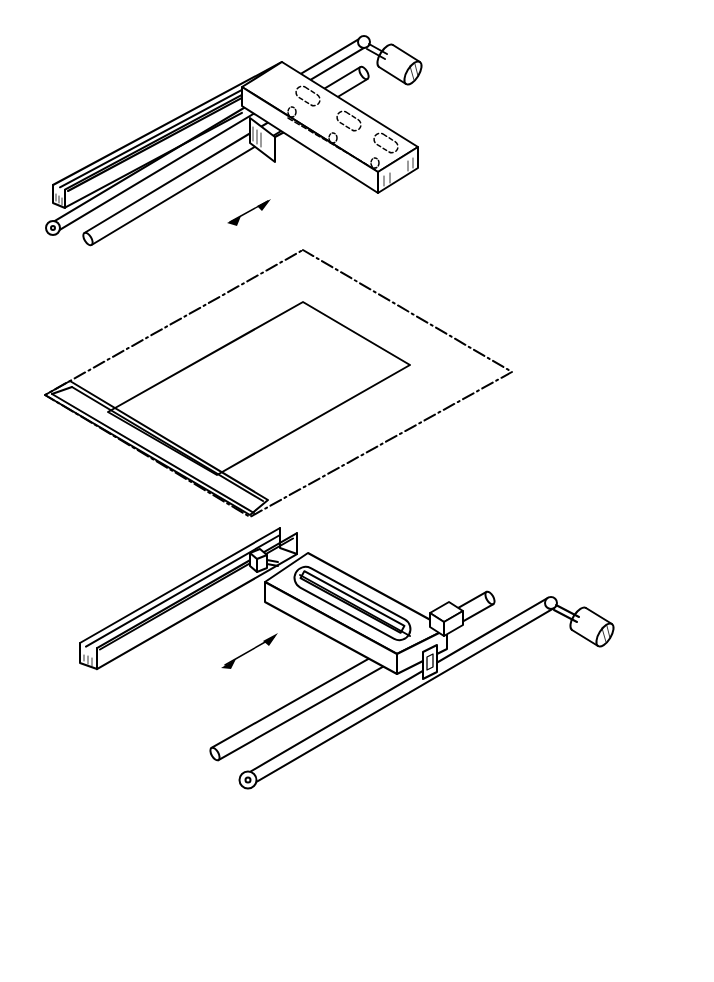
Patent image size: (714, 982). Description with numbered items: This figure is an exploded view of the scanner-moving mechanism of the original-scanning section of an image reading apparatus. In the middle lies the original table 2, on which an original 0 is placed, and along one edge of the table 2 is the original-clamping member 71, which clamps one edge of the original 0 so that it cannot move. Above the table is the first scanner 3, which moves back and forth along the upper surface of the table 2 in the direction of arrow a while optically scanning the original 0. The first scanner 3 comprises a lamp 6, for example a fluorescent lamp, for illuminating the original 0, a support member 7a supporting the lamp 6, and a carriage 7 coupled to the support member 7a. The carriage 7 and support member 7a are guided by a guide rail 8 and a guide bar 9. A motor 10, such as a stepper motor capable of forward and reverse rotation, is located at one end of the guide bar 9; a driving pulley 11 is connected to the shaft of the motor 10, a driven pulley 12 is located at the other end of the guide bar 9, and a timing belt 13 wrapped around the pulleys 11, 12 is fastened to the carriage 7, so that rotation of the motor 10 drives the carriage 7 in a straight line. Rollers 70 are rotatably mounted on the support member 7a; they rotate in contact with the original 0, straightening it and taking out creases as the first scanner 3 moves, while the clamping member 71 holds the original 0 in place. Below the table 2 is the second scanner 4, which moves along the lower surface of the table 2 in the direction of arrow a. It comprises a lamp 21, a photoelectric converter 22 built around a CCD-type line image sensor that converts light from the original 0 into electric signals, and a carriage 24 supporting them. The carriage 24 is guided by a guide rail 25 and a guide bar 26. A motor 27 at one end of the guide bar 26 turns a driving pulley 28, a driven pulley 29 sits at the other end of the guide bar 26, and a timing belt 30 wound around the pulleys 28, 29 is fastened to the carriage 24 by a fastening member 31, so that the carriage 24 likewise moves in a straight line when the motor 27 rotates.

The original 0 is at (372, 350).
The original table 2 is at (490, 357).
The first scanner 3 is at (430, 108).
The second scanner 4 is at (452, 578).
The lamp 6 is at (357, 116).
The carriage 7 is at (266, 152).
The support member 7a is at (412, 162).
The guide rail 8 is at (118, 152).
The guide bar 9 is at (167, 204).
The motor 10 is at (407, 57).
The driving pulley 11 is at (366, 36).
The driven pulley 12 is at (53, 236).
The timing belt 13 is at (315, 66).
The lamp 21 is at (350, 592).
The photoelectric converter 22 is at (281, 585).
The carriage 24 is at (364, 608).
The guide rail 25 is at (160, 613).
The guide bar 26 is at (235, 743).
The motor 27 is at (596, 618).
The driving pulley 28 is at (555, 598).
The driven pulley 29 is at (248, 790).
The timing belt 30 is at (333, 741).
The fastening member 31 is at (437, 666).
The rollers 70 is at (299, 78).
The original-clamping member 71 is at (67, 393).